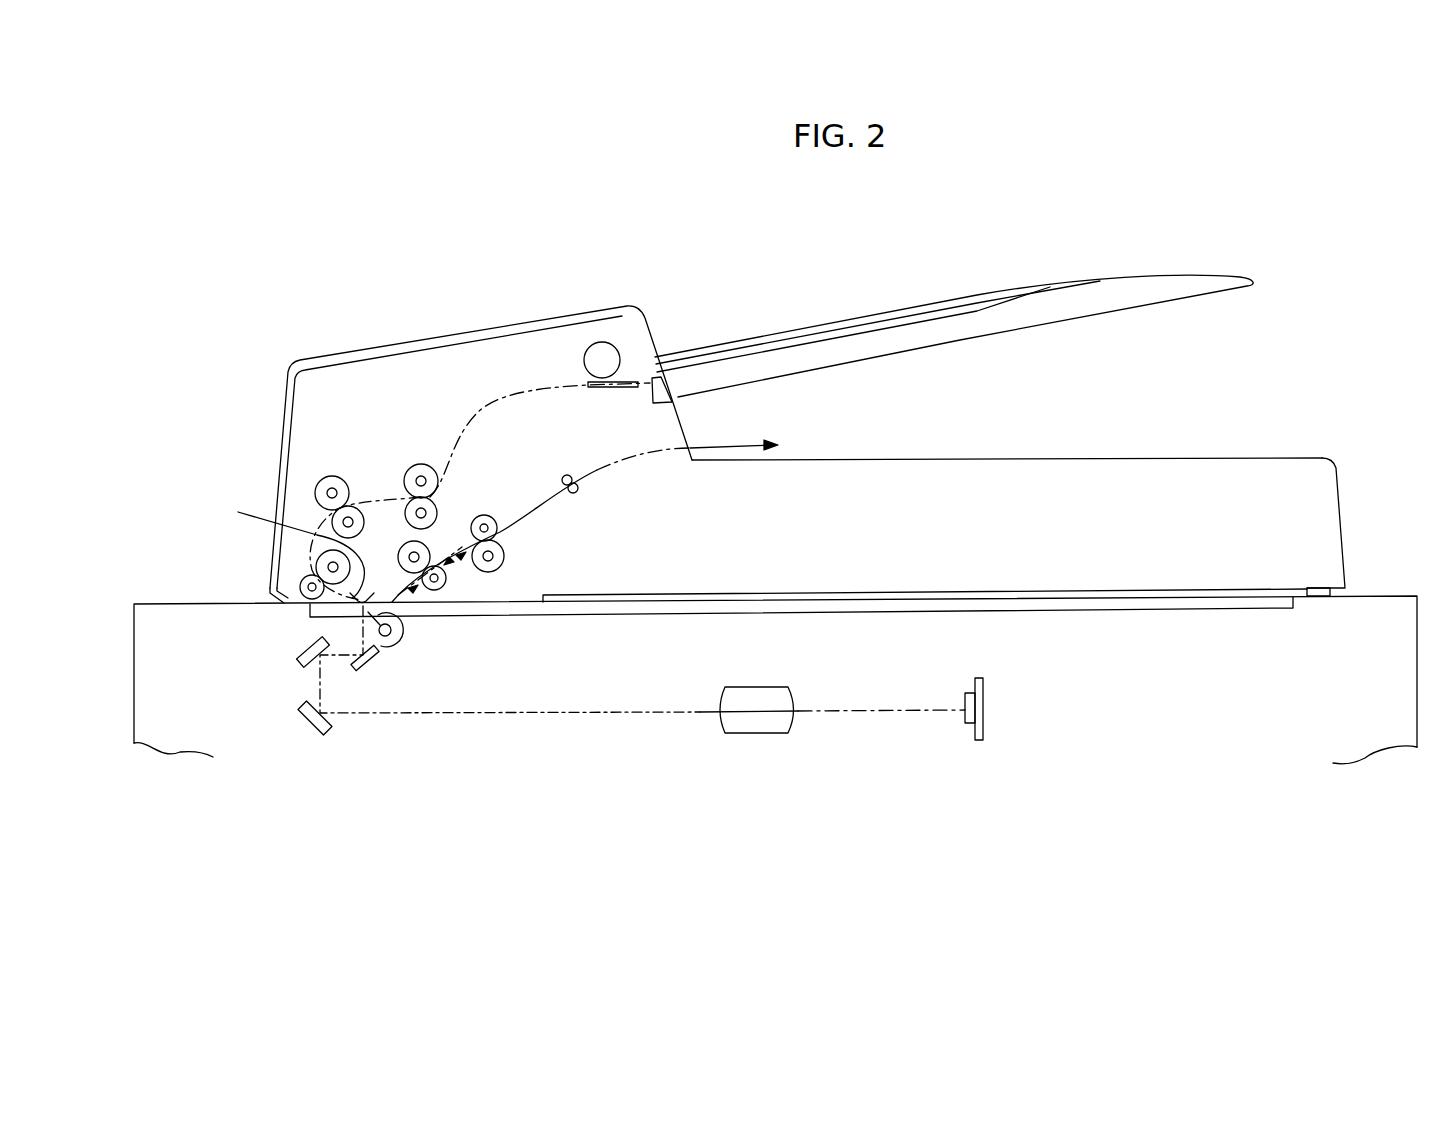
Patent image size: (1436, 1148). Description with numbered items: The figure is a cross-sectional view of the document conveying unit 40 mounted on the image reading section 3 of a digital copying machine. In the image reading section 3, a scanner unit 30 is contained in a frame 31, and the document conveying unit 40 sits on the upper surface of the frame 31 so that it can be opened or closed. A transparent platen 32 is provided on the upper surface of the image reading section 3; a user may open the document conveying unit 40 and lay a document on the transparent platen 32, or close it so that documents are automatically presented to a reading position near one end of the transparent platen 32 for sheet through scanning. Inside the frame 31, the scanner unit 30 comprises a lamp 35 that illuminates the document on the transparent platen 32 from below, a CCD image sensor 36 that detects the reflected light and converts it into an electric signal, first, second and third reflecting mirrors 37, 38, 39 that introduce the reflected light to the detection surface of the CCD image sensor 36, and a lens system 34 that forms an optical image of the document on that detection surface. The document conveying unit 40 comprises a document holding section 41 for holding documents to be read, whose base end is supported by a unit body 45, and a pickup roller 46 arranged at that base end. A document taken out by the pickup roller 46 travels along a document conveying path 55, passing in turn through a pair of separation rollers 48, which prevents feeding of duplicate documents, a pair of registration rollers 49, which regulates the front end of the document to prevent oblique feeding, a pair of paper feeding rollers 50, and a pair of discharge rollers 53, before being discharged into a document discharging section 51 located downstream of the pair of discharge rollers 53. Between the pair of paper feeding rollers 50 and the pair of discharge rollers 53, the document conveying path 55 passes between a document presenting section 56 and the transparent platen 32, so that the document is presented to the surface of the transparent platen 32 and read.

The image reading section 3 is at (1348, 421).
The scanner unit 30 is at (590, 778).
The frame 31 is at (1382, 594).
The transparent platen 32 is at (998, 605).
The lens system 34 is at (757, 728).
The lamp 35 is at (398, 638).
The CCD image sensor 36 is at (965, 718).
The first reflecting mirror 37 is at (373, 660).
The second reflecting mirror 38 is at (297, 670).
The third reflecting mirror 39 is at (307, 720).
The document conveying unit 40 is at (546, 232).
The document holding section 41 is at (1227, 282).
The unit body 45 is at (400, 342).
The pickup roller 46 is at (590, 358).
The pair of separation rollers 48 is at (407, 501).
The pair of registration rollers 49 is at (360, 503).
The pair of paper feeding rollers 50 is at (318, 563).
The document discharging section 51 is at (1010, 457).
The pair of discharge rollers 53 is at (500, 533).
The document conveying path 55 is at (322, 518).
The document presenting section 56 is at (280, 544).